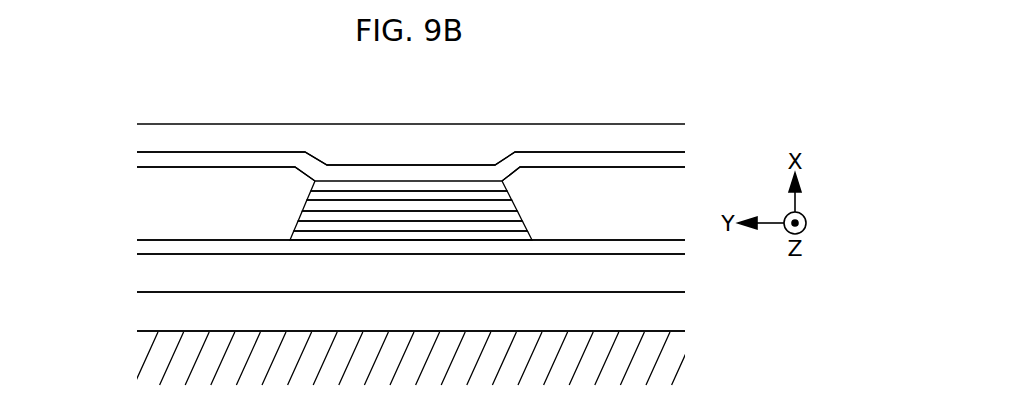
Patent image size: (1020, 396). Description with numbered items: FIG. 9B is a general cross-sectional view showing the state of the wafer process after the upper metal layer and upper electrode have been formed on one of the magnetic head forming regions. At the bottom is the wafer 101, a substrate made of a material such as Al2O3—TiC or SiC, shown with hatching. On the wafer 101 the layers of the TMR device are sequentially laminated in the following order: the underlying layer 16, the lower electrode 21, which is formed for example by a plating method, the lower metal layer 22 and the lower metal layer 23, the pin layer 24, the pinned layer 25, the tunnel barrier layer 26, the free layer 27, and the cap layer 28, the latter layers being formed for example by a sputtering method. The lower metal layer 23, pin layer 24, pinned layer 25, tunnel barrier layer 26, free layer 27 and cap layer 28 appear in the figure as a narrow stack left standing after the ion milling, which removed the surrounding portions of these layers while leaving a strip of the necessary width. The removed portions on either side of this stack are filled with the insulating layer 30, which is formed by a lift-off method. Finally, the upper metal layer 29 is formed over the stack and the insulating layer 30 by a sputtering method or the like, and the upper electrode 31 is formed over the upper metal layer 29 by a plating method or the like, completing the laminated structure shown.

The underlying layer 16 is at (426, 327).
The lower electrode 21 is at (426, 287).
The lower metal layer 22 is at (576, 244).
The lower metal layer 23 is at (340, 237).
The pin layer 24 is at (362, 228).
The pinned layer 25 is at (393, 217).
The tunnel barrier layer 26 is at (413, 207).
The free layer 27 is at (435, 198).
The cap layer 28 is at (480, 185).
The upper metal layer 29 is at (189, 160).
The insulating layer 30 is at (247, 190).
The upper electrode 31 is at (643, 130).
The wafer 101 is at (667, 353).